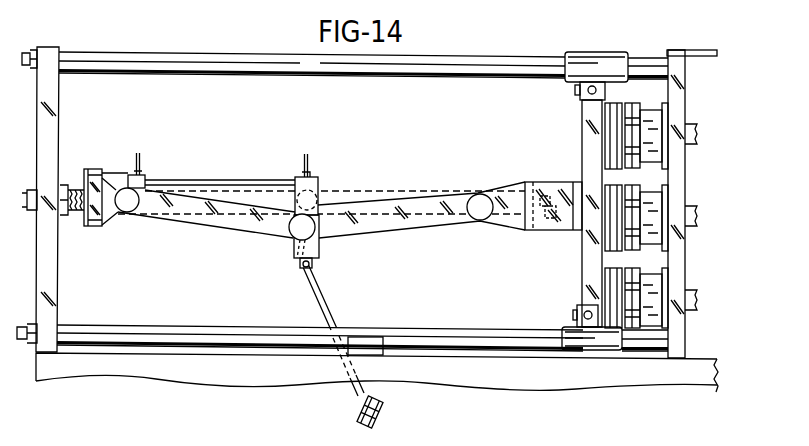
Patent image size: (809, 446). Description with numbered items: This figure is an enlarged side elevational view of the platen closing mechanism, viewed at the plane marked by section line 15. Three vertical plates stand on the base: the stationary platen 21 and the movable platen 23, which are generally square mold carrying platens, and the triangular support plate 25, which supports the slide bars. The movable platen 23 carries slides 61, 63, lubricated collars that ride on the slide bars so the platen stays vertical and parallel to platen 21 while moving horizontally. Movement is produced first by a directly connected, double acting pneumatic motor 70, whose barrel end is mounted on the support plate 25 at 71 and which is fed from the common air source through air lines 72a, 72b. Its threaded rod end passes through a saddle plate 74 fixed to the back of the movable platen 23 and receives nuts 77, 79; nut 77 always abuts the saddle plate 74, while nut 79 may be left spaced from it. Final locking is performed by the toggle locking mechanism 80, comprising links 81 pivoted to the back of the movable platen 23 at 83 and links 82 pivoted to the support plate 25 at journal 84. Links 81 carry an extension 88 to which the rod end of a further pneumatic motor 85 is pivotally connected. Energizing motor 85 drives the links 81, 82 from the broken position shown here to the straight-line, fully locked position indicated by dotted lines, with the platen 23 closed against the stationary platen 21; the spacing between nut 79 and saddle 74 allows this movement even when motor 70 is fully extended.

The section line 15- 15 is at (113, 156).
The stationary platen 21 is at (684, 333).
The movable platen 23 is at (578, 293).
The support plate 25 is at (50, 308).
The slide 61 is at (606, 344).
The slide 63 is at (585, 56).
The pneumatic motor 70 is at (245, 188).
The barrel end mounting 71 is at (76, 216).
The air line 72a is at (139, 156).
The air line 72b is at (312, 159).
The saddle plate 74 is at (521, 182).
The nut 77 is at (521, 195).
The nut 79 is at (560, 212).
The toggle locking mechanism 80 is at (397, 189).
The toggle link 81 is at (443, 198).
The toggle link 82 is at (258, 227).
The pivotal connection 83 is at (480, 221).
The journal 84 is at (126, 213).
The pneumatic motor 85 is at (379, 420).
The extension 88 is at (320, 248).